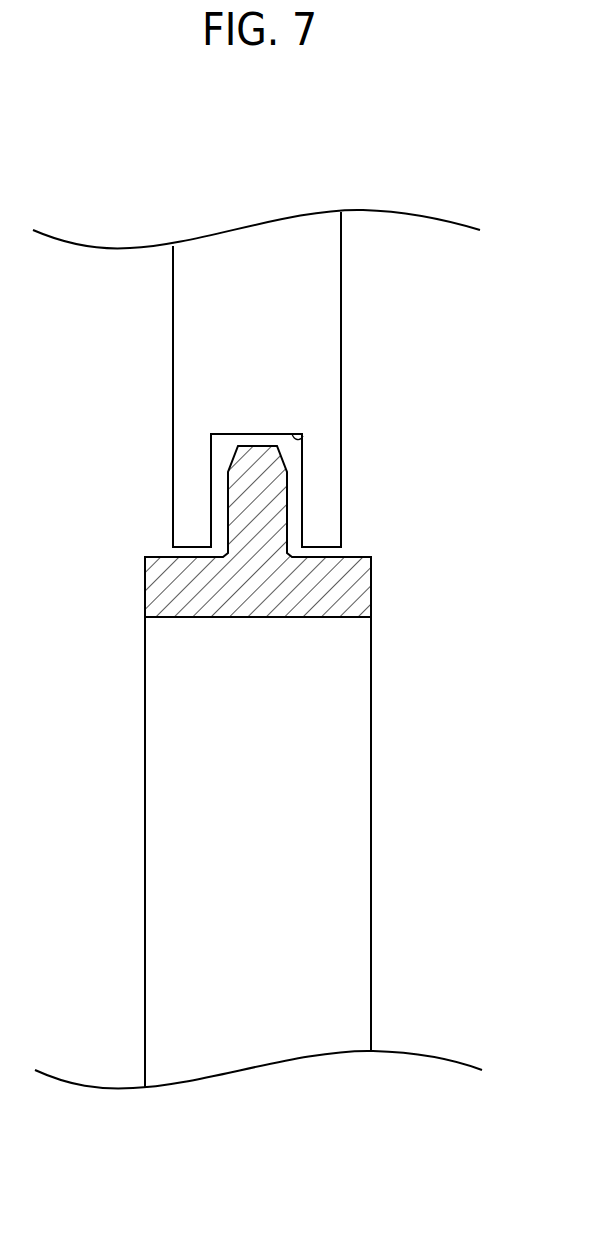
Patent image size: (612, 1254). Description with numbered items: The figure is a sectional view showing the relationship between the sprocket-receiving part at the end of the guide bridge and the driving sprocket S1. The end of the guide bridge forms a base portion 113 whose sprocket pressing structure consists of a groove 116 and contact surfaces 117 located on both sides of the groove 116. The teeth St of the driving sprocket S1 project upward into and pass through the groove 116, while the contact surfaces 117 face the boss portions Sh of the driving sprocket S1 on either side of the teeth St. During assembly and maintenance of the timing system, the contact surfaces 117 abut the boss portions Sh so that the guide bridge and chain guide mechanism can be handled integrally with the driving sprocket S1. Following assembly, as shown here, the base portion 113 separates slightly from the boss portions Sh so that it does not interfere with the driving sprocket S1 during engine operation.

The base portion 113 is at (215, 338).
The groove 116 is at (302, 438).
The contact surfaces 117 is at (202, 547).
The teeth St is at (270, 488).
The boss portions Sh is at (163, 557).
The driving sprocket S1 is at (360, 757).